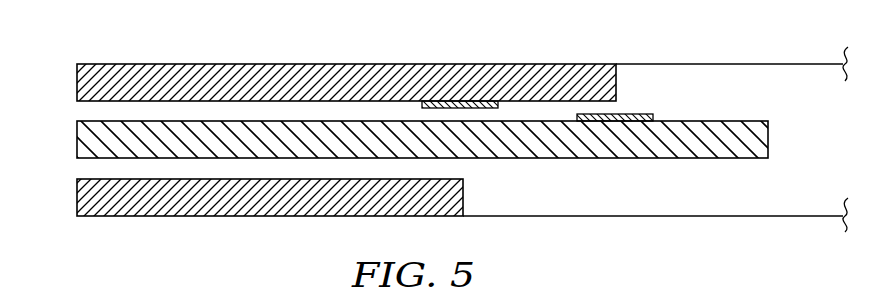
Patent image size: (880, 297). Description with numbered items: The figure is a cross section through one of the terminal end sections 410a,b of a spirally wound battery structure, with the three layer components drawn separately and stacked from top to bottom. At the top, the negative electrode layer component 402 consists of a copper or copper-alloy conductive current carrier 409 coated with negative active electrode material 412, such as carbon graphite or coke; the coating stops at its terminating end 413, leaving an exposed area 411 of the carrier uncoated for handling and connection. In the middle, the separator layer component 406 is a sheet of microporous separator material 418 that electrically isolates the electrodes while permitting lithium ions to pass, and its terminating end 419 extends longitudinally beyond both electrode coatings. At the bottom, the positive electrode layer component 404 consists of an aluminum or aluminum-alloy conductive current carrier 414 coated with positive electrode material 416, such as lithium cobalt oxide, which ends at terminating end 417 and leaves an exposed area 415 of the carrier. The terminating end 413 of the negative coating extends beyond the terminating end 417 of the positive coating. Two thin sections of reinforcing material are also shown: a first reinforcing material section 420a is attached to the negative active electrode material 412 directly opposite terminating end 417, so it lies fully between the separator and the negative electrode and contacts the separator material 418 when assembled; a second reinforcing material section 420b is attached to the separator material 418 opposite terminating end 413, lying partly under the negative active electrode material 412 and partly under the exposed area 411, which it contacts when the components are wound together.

The negative electrode layer component 402 is at (75, 64).
The positive electrode layer component 404 is at (75, 179).
The separator layer component 406 is at (75, 121).
The conductive current carrier 409 is at (828, 64).
The terminal end sections 410a,b is at (350, 63).
The exposed area of conductive current carrier 411 is at (703, 64).
The negative active electrode material 412 is at (164, 102).
The terminating end of negative active electrode material 413 is at (616, 78).
The conductive current carrier 414 is at (838, 215).
The exposed area of conductive current carrier 415 is at (570, 215).
The positive electrode material 416 is at (168, 174).
The terminating end of positive active electrode material 417 is at (464, 190).
The separator material 418 is at (712, 158).
The terminating end of separator material 419 is at (768, 137).
The first reinforcing material section 420a is at (498, 108).
The second reinforcing material section 420b is at (652, 115).